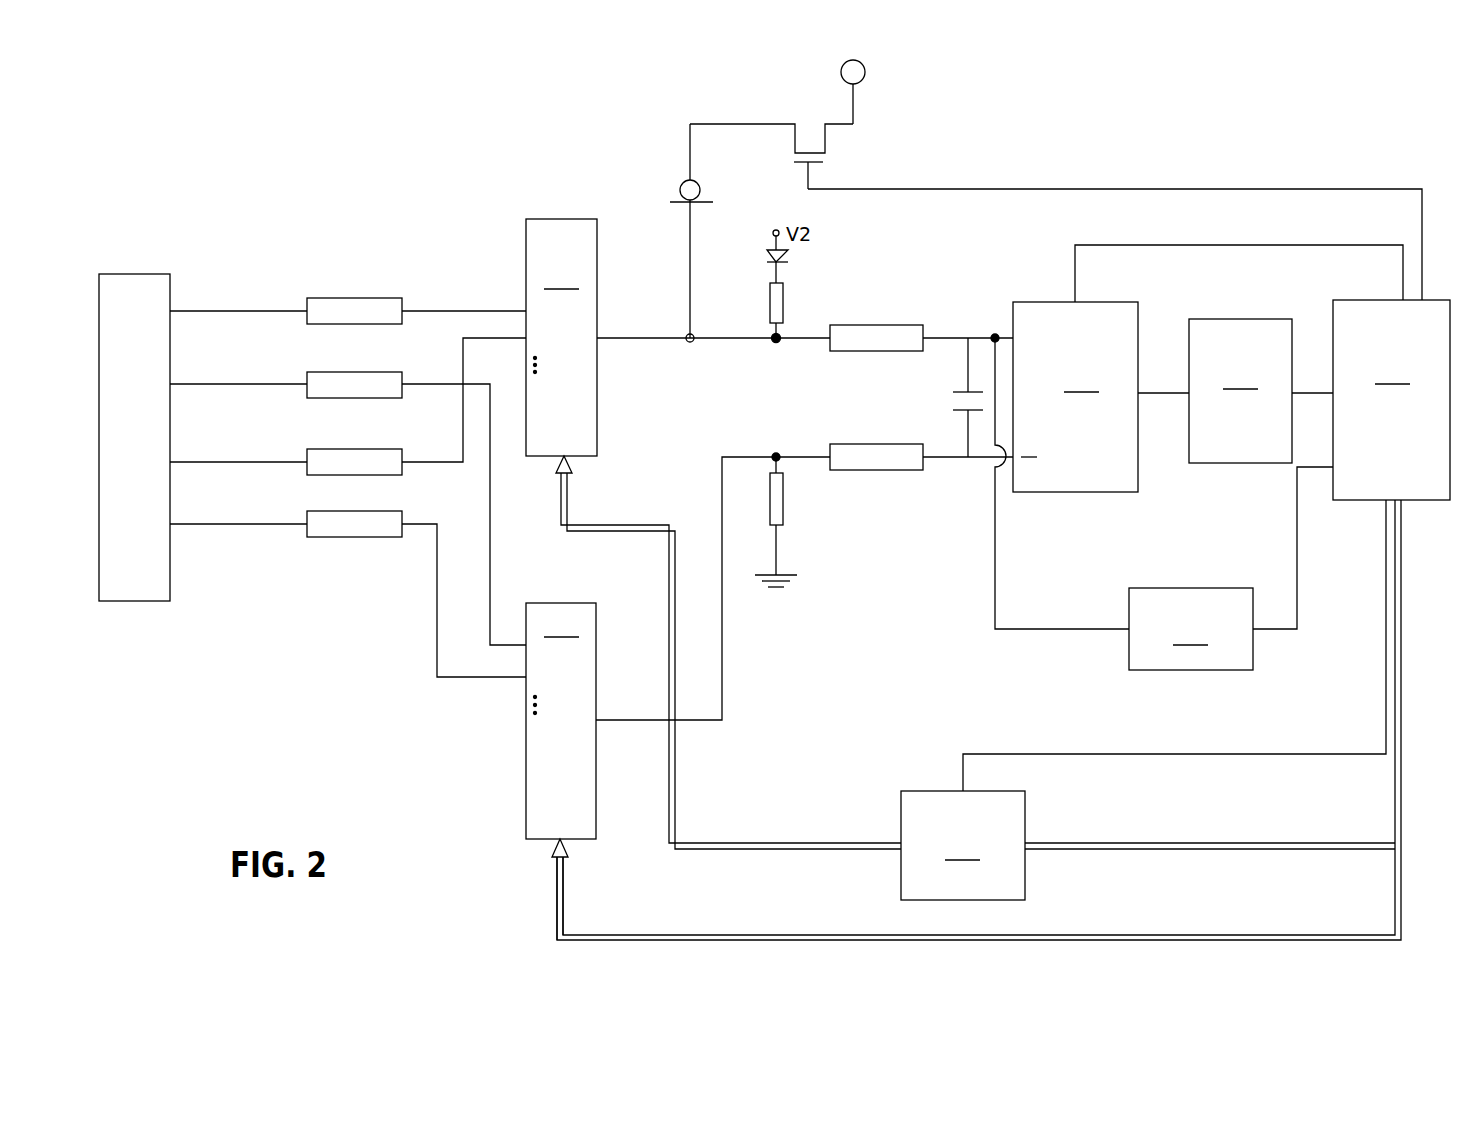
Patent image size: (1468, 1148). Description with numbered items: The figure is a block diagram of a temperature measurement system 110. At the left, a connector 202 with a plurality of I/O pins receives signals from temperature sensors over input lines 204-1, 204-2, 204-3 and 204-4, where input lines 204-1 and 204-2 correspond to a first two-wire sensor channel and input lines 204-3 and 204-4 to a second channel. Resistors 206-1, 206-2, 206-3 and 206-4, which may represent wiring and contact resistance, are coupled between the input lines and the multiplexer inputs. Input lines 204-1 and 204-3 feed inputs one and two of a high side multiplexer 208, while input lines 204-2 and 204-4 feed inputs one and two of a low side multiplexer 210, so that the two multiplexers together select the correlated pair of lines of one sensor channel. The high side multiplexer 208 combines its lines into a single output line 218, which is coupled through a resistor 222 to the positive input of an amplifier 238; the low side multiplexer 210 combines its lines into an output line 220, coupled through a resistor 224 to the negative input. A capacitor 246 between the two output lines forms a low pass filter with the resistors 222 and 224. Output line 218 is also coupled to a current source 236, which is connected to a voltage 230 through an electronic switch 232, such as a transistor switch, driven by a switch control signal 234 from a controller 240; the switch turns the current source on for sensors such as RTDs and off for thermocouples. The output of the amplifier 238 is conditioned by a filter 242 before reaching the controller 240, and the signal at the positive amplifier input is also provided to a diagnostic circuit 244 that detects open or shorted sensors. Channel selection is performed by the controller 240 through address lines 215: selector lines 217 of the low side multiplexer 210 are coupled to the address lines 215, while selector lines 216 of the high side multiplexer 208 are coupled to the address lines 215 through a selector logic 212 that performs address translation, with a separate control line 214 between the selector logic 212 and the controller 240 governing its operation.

The temperature measurement system 110 is at (1286, 162).
The connector 202 is at (135, 601).
The input line 204-1 is at (190, 311).
The input line 204-2 is at (190, 384).
The input line 204-3 is at (190, 462).
The input line 204-4 is at (190, 524).
The resistor 206-1 is at (353, 297).
The resistor 206-2 is at (353, 372).
The resistor 206-3 is at (353, 449).
The resistor 206-4 is at (353, 512).
The high side multiplexer 208 is at (561, 346).
The low side multiplexer 210 is at (561, 730).
The selector logic 212 is at (963, 845).
The control line 214 is at (1048, 754).
The address lines 215 is at (1393, 828).
The selector lines 216 is at (733, 848).
The selector lines 217 is at (563, 887).
The output line 218 is at (607, 338).
The output line 220 is at (697, 720).
The resistor 222 is at (878, 325).
The resistor 224 is at (893, 472).
The voltage 230 is at (864, 70).
The electronic switch 232 is at (826, 140).
The switch control signal 234 is at (1013, 190).
The current source 236 is at (682, 188).
The amplifier 238 is at (1208, 368).
The controller 240 is at (1391, 400).
The filter 242 is at (1261, 391).
The diagnostic circuit 244 is at (1231, 568).
The capacitor 246 is at (970, 337).